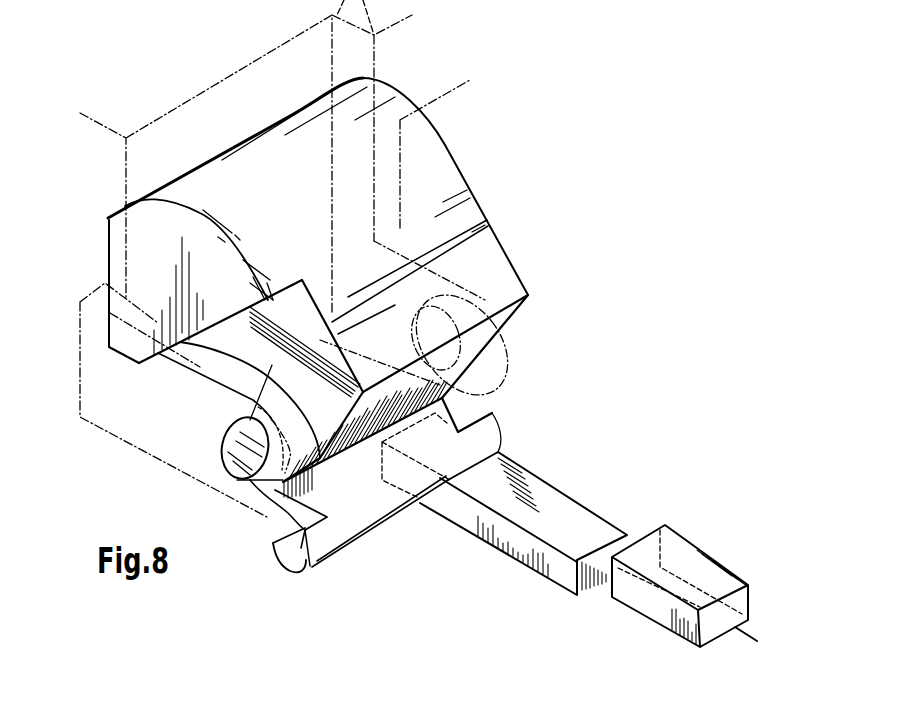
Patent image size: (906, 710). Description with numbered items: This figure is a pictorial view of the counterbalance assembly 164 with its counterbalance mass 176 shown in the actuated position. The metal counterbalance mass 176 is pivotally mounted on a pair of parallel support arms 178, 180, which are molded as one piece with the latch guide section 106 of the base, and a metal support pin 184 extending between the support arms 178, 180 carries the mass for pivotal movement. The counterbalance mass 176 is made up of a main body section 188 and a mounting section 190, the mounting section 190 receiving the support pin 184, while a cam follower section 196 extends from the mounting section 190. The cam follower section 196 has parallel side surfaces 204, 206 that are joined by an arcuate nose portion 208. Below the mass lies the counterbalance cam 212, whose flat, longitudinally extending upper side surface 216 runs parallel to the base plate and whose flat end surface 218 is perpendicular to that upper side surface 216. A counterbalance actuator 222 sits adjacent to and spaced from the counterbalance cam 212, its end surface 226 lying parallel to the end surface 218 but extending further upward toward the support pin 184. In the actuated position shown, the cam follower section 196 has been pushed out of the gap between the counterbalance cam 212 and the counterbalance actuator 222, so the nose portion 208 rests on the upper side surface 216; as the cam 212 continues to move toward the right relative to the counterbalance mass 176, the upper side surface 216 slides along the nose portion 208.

The latch guide section 106 is at (445, 102).
The counterbalance assembly 164 is at (563, 172).
The counterbalance mass 176 is at (445, 152).
The support arm 178 is at (508, 358).
The support arm 180 is at (98, 427).
The support pin 184 is at (230, 452).
The main body section 188 is at (473, 228).
The mounting section 190 is at (217, 412).
The cam follower section 196 is at (310, 572).
The side surface 204 is at (275, 544).
The side surface 206 is at (300, 541).
The arcuate nose portion 208 is at (293, 573).
The counterbalance cam 212 is at (560, 482).
The upper side surface 216 is at (520, 495).
The end surface 218 is at (592, 587).
The counterbalance actuator 222 is at (724, 567).
The end surface 226 is at (647, 530).